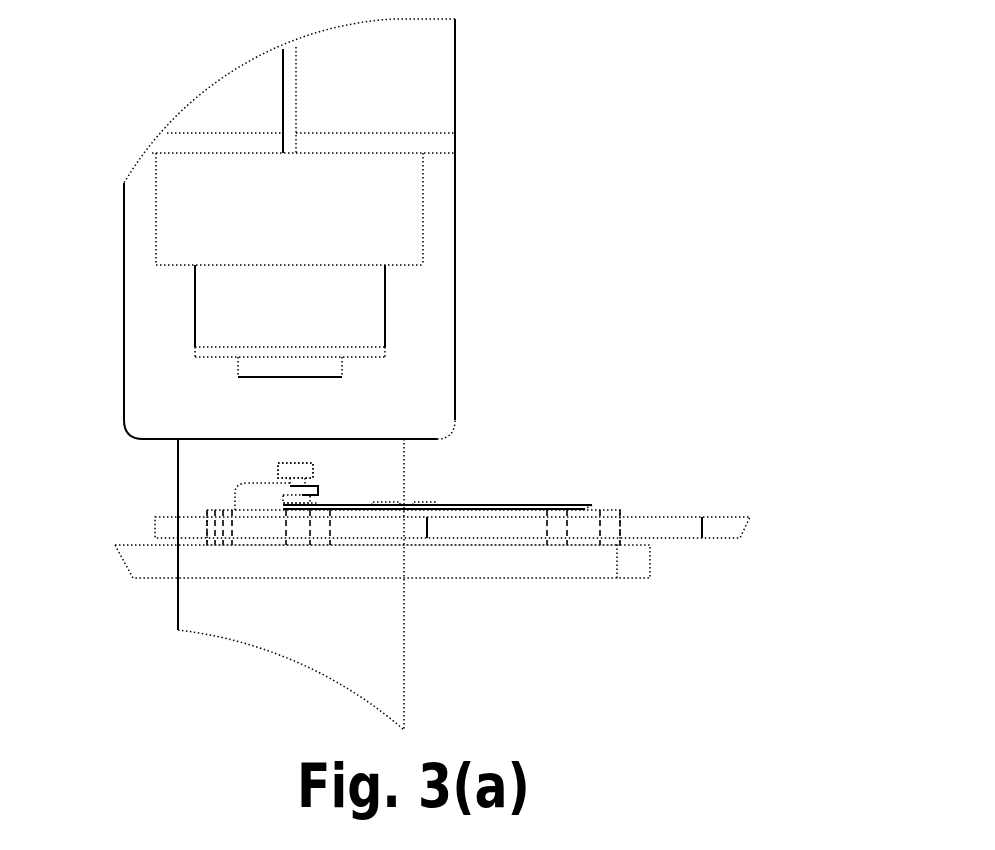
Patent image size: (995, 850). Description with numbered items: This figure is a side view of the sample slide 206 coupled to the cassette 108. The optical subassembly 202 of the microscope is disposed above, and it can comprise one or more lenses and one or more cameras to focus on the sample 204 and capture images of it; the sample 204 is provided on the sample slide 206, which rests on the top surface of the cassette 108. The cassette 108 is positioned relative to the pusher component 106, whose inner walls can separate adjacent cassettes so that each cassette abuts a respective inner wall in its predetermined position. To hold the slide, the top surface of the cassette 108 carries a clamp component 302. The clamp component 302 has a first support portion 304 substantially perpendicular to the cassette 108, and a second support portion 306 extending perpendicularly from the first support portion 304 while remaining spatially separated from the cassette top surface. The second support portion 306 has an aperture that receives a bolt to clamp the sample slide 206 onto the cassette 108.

The optical subassembly 202 is at (347, 243).
The clamp component 302 is at (325, 472).
The second support portion 306 is at (292, 487).
The first support portion 304 is at (245, 500).
The sample 204 is at (413, 502).
The sample slide 206 is at (522, 505).
The pusher component 106 is at (665, 525).
The cassette 108 is at (258, 528).